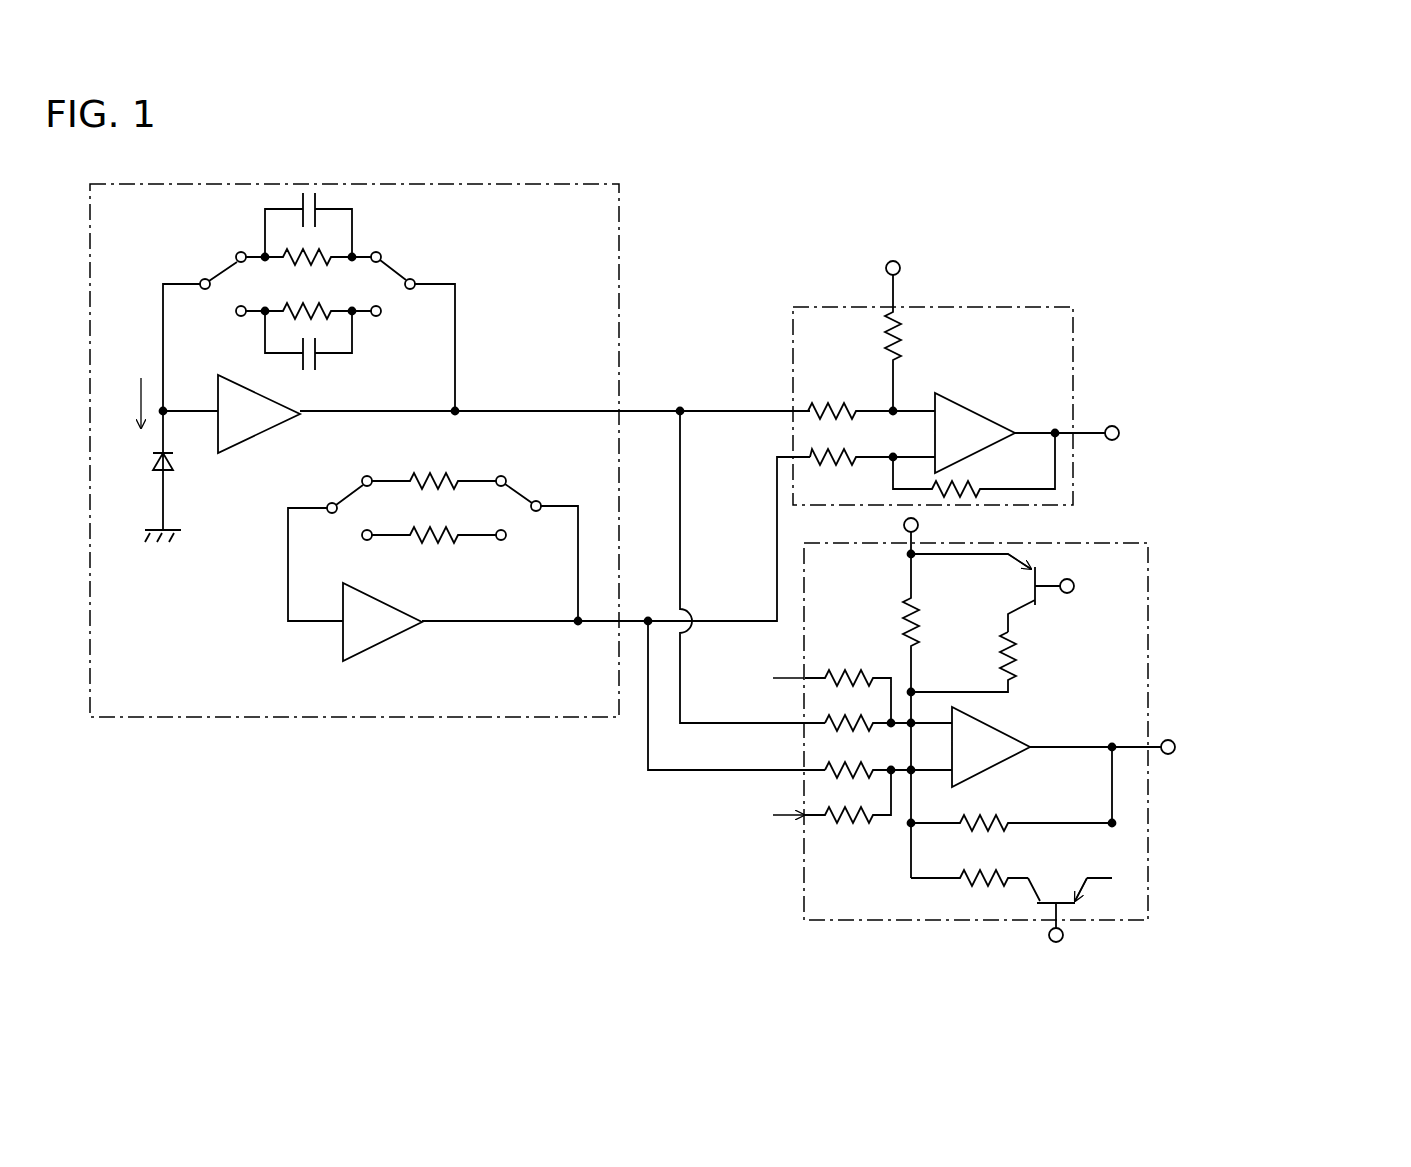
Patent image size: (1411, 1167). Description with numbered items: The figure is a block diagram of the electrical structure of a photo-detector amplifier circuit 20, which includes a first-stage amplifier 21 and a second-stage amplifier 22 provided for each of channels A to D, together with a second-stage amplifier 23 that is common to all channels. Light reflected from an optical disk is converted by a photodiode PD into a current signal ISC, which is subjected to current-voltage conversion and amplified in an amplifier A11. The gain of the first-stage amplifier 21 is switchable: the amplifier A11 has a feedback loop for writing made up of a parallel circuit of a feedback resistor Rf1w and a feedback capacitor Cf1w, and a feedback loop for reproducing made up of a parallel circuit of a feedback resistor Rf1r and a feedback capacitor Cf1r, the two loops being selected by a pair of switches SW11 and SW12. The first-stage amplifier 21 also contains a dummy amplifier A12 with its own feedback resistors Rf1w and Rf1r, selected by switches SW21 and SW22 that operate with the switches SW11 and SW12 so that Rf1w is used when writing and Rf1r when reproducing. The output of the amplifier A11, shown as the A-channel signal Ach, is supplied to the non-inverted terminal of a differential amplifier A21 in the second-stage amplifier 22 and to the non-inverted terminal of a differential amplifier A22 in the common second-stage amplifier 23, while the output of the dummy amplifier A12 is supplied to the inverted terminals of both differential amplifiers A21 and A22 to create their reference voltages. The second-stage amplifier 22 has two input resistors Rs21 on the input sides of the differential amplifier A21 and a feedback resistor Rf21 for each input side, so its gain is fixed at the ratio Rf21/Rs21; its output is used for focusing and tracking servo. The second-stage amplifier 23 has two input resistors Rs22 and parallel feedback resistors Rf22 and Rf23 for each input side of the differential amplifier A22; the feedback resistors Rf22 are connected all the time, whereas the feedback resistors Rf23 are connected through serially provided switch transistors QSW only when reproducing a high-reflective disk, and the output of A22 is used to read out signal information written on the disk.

The photo-detector amplifier circuit 20 is at (289, 181).
The first-stage amplifier 21 is at (325, 718).
The second-stage amplifier 22 is at (1077, 352).
The second-stage amplifier 23 is at (1152, 614).
The feedback capacitor Cf1w is at (320, 210).
The feedback capacitor Cf1r is at (318, 358).
The feedback resistor Rf1w is at (334, 256).
The feedback resistor Rf1r is at (334, 311).
The switch SW11 is at (392, 272).
The switch SW12 is at (223, 271).
The switch SW21 is at (527, 498).
The switch SW22 is at (332, 502).
The amplifier A11 is at (250, 445).
The dummy amplifier A12 is at (372, 650).
The current signal ISC is at (119, 403).
The photodiode PD is at (158, 478).
The A channel signal Ach is at (726, 577).
The feedback resistor Rf21 is at (898, 347).
The input resistor Rs21 is at (813, 404).
The differential amplifier A21 is at (975, 425).
The feedback resistor Rf22 is at (905, 626).
The feedback resistor Rf23 is at (1015, 655).
The input resistor Rs22 is at (878, 722).
The switch transistor QSW is at (1030, 588).
The differential amplifier A22 is at (1005, 740).